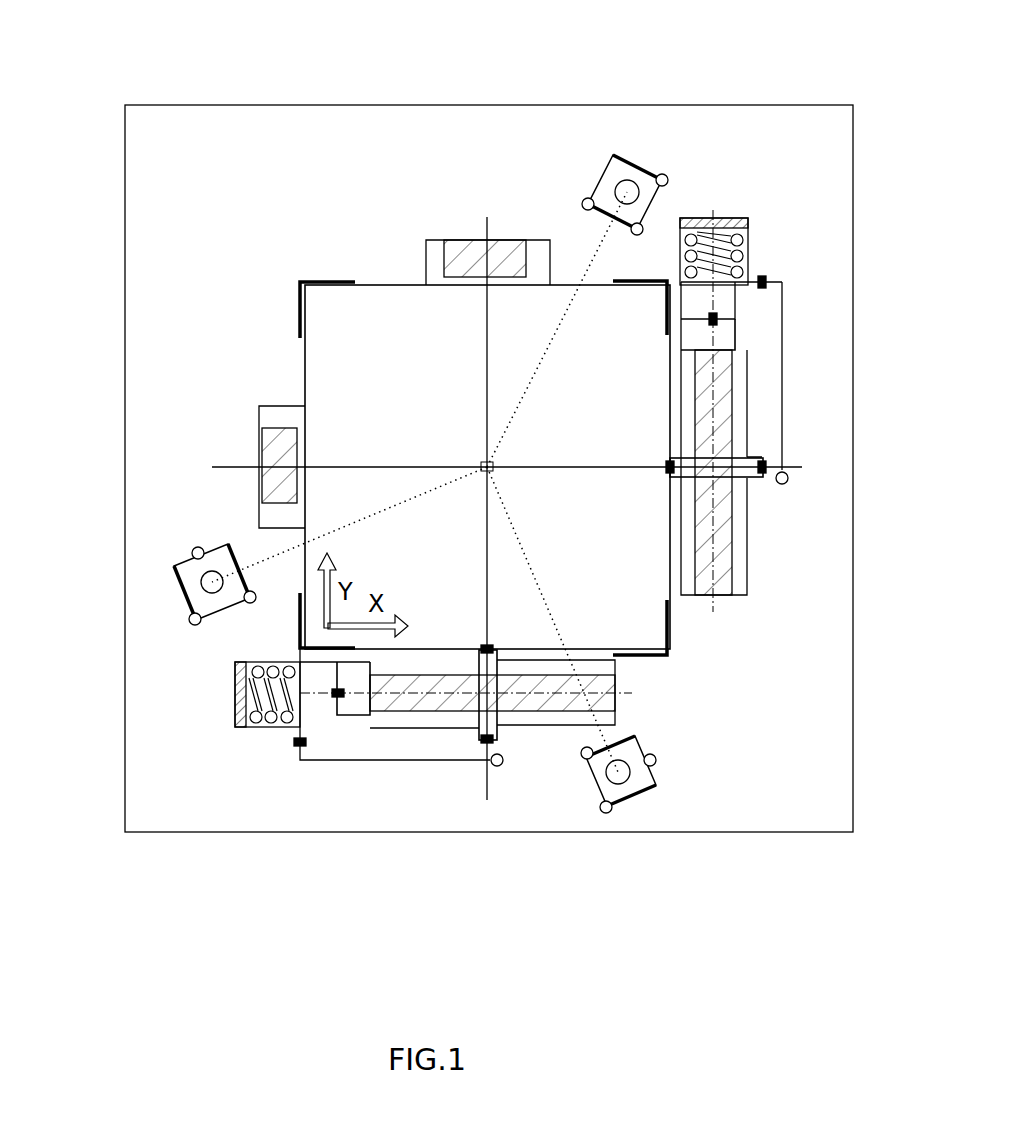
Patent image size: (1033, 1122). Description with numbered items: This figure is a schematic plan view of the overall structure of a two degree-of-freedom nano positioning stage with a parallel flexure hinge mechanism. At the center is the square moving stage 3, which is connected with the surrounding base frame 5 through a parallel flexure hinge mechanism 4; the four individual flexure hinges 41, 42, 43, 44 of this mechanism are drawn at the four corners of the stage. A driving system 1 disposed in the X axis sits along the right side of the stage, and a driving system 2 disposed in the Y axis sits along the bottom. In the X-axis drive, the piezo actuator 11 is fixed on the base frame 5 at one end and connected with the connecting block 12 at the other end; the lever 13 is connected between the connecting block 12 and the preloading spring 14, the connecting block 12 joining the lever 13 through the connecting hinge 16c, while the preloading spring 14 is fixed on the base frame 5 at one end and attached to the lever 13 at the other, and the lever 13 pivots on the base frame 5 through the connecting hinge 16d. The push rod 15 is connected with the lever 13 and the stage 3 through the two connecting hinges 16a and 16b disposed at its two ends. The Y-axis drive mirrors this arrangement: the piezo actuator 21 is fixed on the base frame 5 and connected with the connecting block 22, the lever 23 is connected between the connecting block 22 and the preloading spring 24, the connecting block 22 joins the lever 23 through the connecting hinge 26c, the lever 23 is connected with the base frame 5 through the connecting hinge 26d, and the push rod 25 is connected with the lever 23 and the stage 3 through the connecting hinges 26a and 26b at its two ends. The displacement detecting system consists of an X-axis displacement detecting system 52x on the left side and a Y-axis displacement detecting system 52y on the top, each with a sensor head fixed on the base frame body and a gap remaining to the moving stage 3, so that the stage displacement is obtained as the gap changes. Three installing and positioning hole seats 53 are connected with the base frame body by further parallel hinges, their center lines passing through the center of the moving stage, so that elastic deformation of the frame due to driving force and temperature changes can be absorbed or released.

The driving system disposed in the X axis 1 is at (735, 320).
The driving system disposed in the Y axis 2 is at (368, 715).
The moving stage 3 is at (612, 609).
The parallel flexure hinge mechanism 4 is at (303, 328).
The base frame 5 is at (280, 287).
The piezo actuator 11 is at (737, 463).
The connecting block 12 is at (730, 343).
The lever 13 is at (767, 407).
The preloading spring 14 is at (720, 252).
The push rod 15 is at (722, 575).
The connecting hinge 16a is at (666, 464).
The connecting hinge 16b is at (768, 471).
The connecting hinge 16c is at (720, 315).
The connecting hinge 16d is at (763, 280).
The piezo actuator 21 is at (569, 703).
The connecting block 22 is at (363, 699).
The lever 23 is at (431, 745).
The preloading spring 24 is at (270, 707).
The push rod 25 is at (492, 703).
The connecting hinge 26a is at (486, 645).
The connecting hinge 26b is at (490, 746).
The connecting hinge 26c is at (334, 700).
The connecting hinge 26d is at (293, 746).
The corner bracket 41 is at (322, 285).
The corner bracket 42 is at (657, 279).
The corner bracket 43 is at (670, 630).
The corner bracket 44 is at (298, 637).
The X-axis displacement detecting system 52x is at (280, 459).
The Y-axis displacement detecting system 52y is at (470, 255).
The installing and positioning hole seat 53 is at (192, 578).